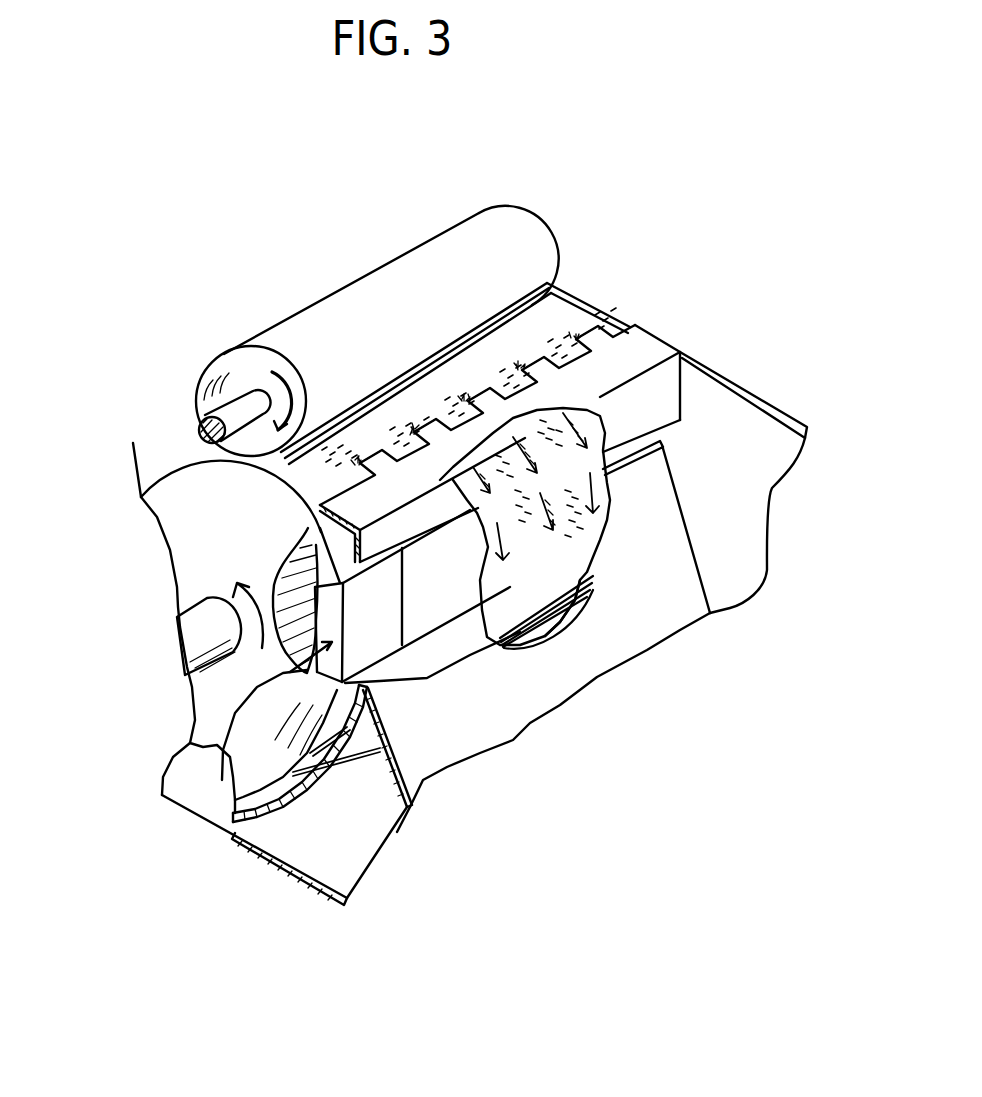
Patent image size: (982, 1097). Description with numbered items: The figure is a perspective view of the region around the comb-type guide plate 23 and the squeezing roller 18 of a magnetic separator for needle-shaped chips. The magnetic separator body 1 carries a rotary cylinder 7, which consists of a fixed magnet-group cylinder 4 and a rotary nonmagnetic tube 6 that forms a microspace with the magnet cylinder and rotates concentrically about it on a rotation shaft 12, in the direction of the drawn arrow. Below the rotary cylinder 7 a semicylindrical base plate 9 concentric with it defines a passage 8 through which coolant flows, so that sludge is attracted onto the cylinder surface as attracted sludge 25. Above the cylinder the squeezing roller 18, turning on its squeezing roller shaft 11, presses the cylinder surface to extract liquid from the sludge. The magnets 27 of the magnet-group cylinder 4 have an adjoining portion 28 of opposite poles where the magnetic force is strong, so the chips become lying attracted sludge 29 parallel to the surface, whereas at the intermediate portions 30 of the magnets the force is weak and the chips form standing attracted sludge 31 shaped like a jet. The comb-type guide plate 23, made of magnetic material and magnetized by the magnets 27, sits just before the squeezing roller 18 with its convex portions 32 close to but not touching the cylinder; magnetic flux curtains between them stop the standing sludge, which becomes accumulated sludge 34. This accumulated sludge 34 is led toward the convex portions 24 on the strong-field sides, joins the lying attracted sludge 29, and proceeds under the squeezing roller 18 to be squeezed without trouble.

The magnetic separator body 1 is at (723, 417).
The fixed magnet-group cylinder 4 is at (222, 780).
The rotary nonmagnetic tube 6 is at (560, 318).
The rotary cylinder 7 is at (600, 545).
The passage 8 is at (270, 800).
The semicylindrical base plate 9 is at (318, 790).
The squeezing roller shaft 11 is at (237, 400).
The rotation shaft 12 is at (185, 640).
The squeezing roller 18 is at (308, 328).
The comb-type guide plate 23 is at (617, 353).
The convex portions of the comb-type guide plate 24 is at (462, 417).
The attracted sludge 25 is at (377, 420).
The magnets 27 is at (412, 652).
The adjoining portion 28 is at (456, 482).
The lying attracted sludge 29 is at (590, 537).
The intermediate portions 30 is at (435, 583).
The standing attracted sludge 31 is at (520, 567).
The convex portions 32 is at (512, 360).
The accumulated sludge 34 is at (463, 420).